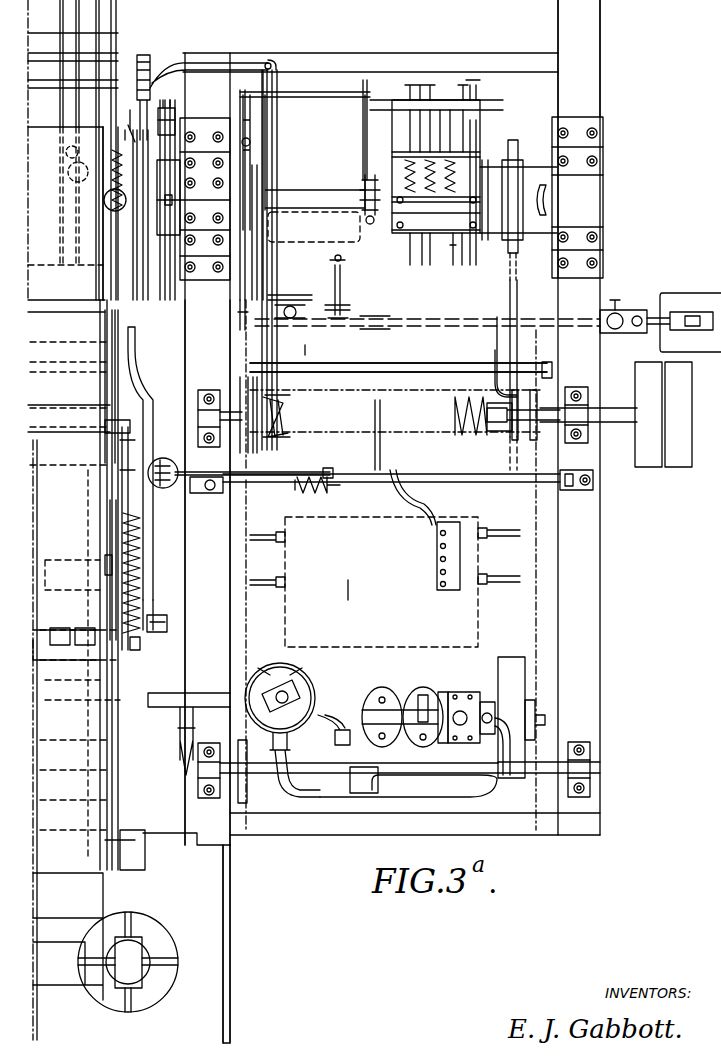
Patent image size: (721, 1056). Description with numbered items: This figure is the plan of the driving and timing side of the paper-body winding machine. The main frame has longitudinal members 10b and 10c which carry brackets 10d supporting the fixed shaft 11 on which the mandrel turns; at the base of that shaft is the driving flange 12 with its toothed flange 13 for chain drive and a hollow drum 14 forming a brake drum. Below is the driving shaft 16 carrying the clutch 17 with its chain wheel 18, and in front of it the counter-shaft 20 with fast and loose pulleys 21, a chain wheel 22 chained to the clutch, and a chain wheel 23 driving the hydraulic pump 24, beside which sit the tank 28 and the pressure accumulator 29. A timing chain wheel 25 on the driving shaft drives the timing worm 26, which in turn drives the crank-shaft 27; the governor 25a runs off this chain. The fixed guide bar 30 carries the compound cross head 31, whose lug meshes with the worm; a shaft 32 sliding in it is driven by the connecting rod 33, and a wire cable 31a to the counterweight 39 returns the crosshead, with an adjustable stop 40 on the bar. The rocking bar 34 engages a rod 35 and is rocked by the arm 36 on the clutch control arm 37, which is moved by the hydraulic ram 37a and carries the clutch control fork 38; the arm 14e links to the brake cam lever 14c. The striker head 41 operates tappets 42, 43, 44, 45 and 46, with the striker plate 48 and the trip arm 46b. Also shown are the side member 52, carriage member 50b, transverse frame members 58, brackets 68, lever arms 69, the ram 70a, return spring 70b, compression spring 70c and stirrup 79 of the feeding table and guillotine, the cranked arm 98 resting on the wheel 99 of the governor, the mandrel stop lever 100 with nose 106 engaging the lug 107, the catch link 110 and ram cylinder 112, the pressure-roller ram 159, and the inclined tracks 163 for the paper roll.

The longitudinal frame member 10b is at (160, 668).
The longitudinal frame member 10c is at (579, 58).
The brackets 10d is at (590, 204).
The fixed shaft 11 is at (236, 195).
The driving flange 12 is at (100, 233).
The toothed flange 13 is at (145, 265).
The hollow drum 14 is at (163, 255).
The brake cam lever 14c is at (252, 122).
The arm 14e is at (306, 92).
The driving shaft 16 is at (298, 190).
The clutch 17 is at (395, 180).
The chain wheel of the clutch 18 is at (514, 138).
The counter-shaft 20 is at (622, 390).
The fast and loose pulleys 21 is at (675, 455).
The chain wheel 22 is at (512, 440).
The chain wheel 23 is at (540, 440).
The hydraulic pump 24 is at (452, 692).
The timing chain wheel 25 is at (258, 163).
The governor 25a is at (284, 320).
The timing worm 26 is at (316, 382).
The crank-shaft 27 is at (265, 768).
The tank 28 is at (385, 558).
The hydraulic pressure accumulator 29 is at (272, 668).
The fixed guide bar 30 is at (460, 476).
The compound cross head 31 is at (372, 388).
The wire cable 31a is at (262, 473).
The shaft 32 is at (355, 347).
The connecting rod 33 is at (348, 588).
The rocking bar 34 is at (420, 428).
The rod 35 is at (383, 443).
The arm 36 is at (495, 350).
The clutch control arm 37 is at (445, 322).
The hydraulic ram 37a is at (600, 318).
The clutch control fork 38 is at (358, 183).
The counterweight 39 is at (170, 455).
The adjustable stop 40 is at (296, 485).
The striker head 41 is at (350, 270).
The tappet 42 is at (412, 258).
The tappet 43 is at (428, 255).
The tappet 44 is at (452, 258).
The tappet 45 is at (460, 255).
The tappet 46 is at (468, 255).
The arm 46b is at (476, 85).
The striker plate 48 is at (314, 227).
The longitudinal member 50b is at (102, 566).
The side member 52 is at (148, 757).
The transverse frame members 58 is at (147, 363).
The brackets 68 is at (135, 482).
The lever arms 69 is at (153, 592).
The hydraulic ram 70a is at (142, 540).
The return spring 70b is at (140, 576).
The compression spring 70c is at (118, 537).
The stirrup 79 is at (168, 632).
The cranked arm 98 is at (256, 64).
The wheel 99 is at (240, 315).
The mandrel stop lever 100 is at (152, 78).
The nose 106 is at (130, 125).
The projecting lug 107 is at (132, 138).
The catch link 110 is at (175, 130).
The hydraulic ram cylinder 112 is at (102, 170).
The hydraulic ram 159 is at (68, 185).
The inclined tracks 163 is at (232, 1015).